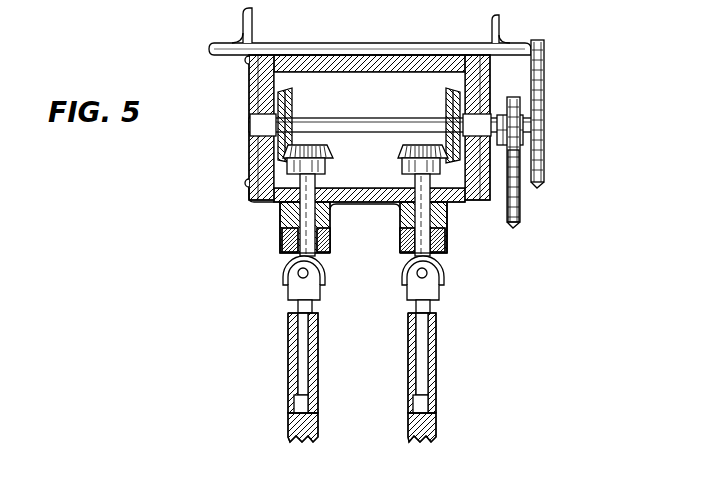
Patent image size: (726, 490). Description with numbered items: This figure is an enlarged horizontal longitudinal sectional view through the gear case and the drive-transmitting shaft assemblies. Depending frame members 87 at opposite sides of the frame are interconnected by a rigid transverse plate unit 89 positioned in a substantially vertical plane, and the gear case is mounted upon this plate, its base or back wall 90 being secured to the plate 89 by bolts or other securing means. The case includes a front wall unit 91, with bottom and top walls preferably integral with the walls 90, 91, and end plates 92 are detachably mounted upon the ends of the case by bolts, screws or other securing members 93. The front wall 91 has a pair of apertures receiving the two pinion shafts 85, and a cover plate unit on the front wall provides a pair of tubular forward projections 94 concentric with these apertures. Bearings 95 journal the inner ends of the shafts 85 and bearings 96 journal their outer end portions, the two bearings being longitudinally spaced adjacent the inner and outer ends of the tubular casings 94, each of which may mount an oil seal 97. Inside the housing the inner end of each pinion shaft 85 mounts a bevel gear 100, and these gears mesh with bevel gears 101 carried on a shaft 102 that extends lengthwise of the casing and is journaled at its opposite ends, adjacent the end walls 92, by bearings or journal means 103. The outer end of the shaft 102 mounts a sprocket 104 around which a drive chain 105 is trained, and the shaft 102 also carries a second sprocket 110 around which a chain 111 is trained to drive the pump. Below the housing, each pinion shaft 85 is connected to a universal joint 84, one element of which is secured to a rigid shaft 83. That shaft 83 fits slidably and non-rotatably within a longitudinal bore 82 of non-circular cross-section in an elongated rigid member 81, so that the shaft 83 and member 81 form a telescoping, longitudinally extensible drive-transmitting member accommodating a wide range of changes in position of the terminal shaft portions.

The elongated rigid member 81 is at (295, 428).
The longitudinal bore 82 is at (423, 406).
The rigid shaft 83 is at (300, 352).
The universal joint 84 is at (293, 282).
The pinion shaft 85 is at (283, 230).
The depending frame member 87 is at (252, 22).
The transverse plate unit 89 is at (382, 54).
The base or back wall 90 is at (318, 54).
The front wall unit 91 is at (265, 198).
The end plate 92 is at (250, 152).
The securing member 93 is at (246, 182).
The tubular forward projection 94 is at (400, 220).
The bearing 95 is at (318, 190).
The bearing 96 is at (283, 240).
The oil seal 97 is at (326, 258).
The bevel gear 100 is at (334, 151).
The bevel gear 101 is at (287, 104).
The shaft 102 is at (364, 118).
The bearing or journal means 103 is at (251, 108).
The sprocket 104 is at (524, 127).
The drive chain 105 is at (545, 56).
The second sprocket 110 is at (514, 101).
The chain 111 is at (516, 212).